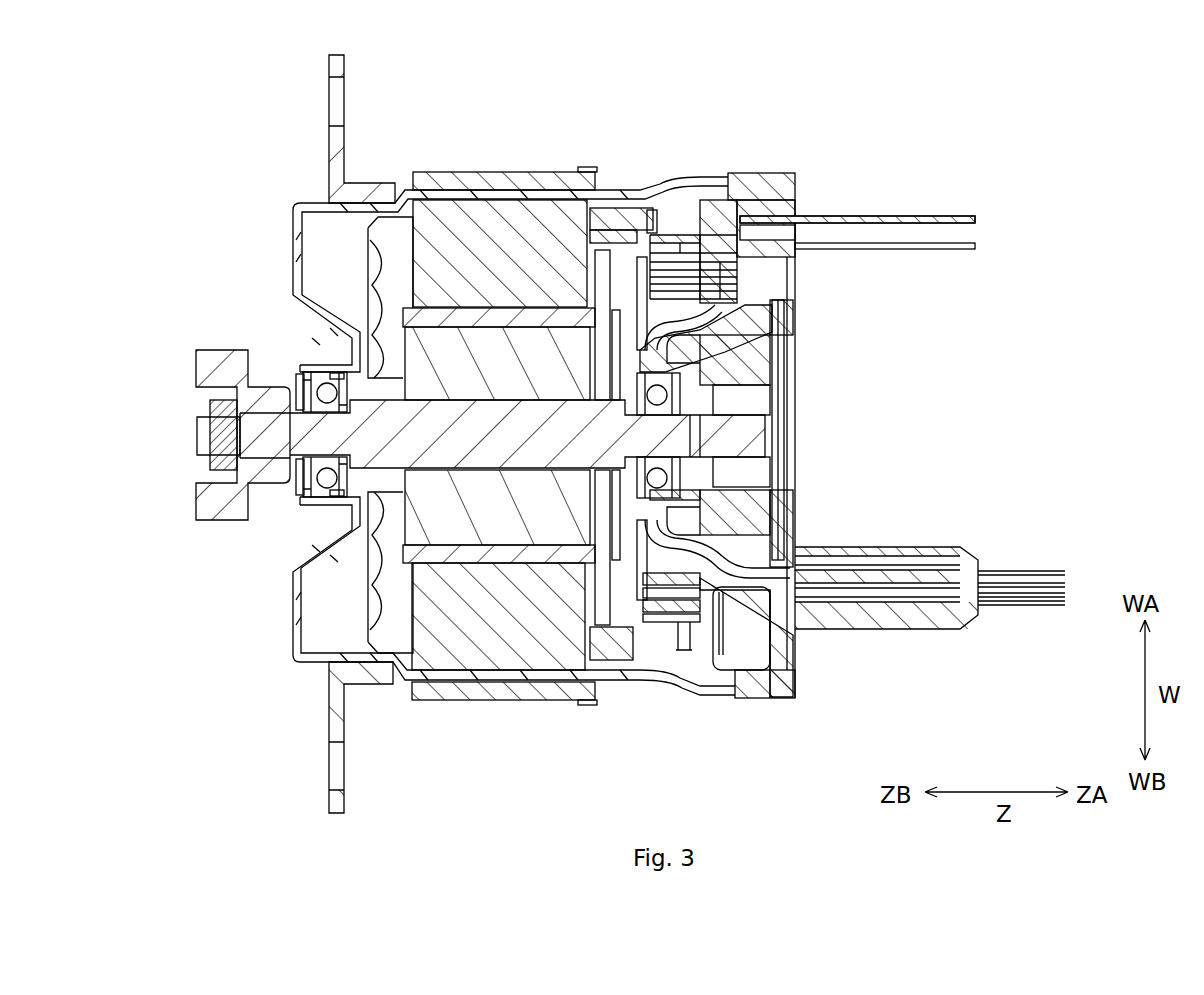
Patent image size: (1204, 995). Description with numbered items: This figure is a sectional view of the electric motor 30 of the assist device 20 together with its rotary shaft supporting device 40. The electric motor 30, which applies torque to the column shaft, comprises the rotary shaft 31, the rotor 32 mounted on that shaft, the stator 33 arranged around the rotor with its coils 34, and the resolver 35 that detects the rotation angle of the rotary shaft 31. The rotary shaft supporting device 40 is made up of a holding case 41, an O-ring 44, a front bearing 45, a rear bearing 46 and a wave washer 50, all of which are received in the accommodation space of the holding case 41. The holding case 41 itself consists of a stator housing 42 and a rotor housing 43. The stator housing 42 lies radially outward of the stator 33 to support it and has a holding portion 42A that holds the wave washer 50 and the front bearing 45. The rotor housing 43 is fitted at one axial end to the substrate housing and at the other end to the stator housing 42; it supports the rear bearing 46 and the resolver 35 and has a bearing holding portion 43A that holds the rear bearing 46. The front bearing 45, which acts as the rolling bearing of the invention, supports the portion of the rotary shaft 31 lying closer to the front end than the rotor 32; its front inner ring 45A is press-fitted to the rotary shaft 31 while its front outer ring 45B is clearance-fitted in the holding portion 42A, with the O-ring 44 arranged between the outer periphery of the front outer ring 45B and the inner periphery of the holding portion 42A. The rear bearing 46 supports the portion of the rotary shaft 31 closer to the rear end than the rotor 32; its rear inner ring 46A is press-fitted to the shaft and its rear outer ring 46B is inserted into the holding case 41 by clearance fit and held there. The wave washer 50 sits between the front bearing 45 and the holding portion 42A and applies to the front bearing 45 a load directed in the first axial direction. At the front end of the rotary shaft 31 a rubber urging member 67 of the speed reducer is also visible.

The assist device 20 is at (964, 83).
The electric motor 30 is at (534, 740).
The rotary shaft 31 is at (258, 475).
The rotor 32 is at (463, 540).
The stator 33 is at (497, 690).
The coils 34 is at (390, 236).
The resolver 35 is at (778, 352).
The rotary shaft supporting device 40 is at (552, 160).
The holding case 41 is at (782, 130).
The stator housing 42 is at (706, 183).
The holding portion 42A is at (307, 504).
The rotor housing 43 is at (750, 183).
The bearing holding portion 43A is at (784, 392).
The O-ring 44 is at (337, 373).
The front bearing 45 is at (309, 499).
The front inner ring 45A is at (347, 412).
The front outer ring 45B is at (302, 385).
The rear bearing 46 is at (612, 391).
The rear inner ring 46A is at (645, 458).
The rear outer ring 46B is at (643, 508).
The wave washer 50 is at (297, 395).
The urging member 67 is at (210, 410).